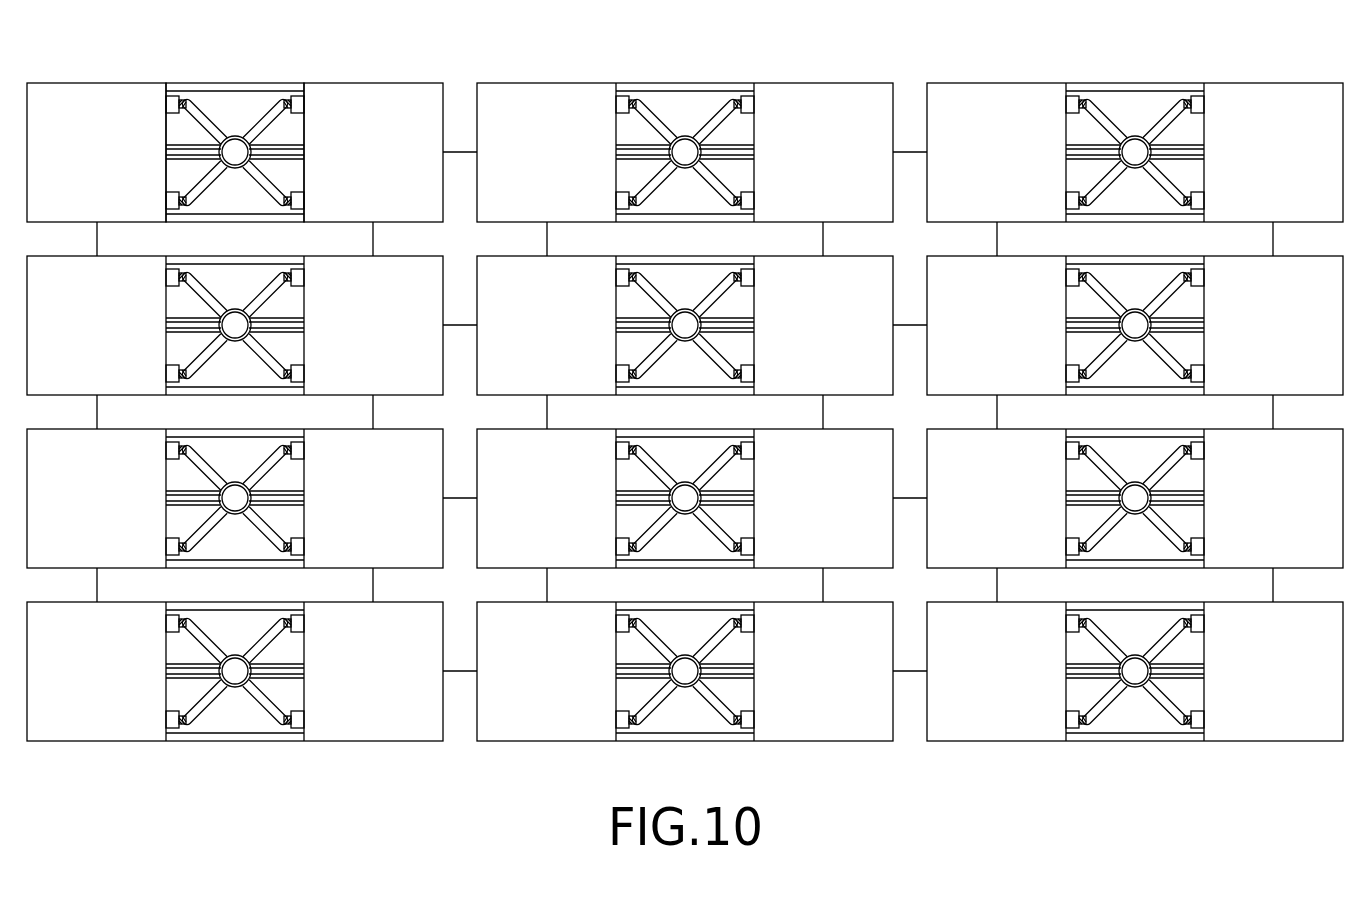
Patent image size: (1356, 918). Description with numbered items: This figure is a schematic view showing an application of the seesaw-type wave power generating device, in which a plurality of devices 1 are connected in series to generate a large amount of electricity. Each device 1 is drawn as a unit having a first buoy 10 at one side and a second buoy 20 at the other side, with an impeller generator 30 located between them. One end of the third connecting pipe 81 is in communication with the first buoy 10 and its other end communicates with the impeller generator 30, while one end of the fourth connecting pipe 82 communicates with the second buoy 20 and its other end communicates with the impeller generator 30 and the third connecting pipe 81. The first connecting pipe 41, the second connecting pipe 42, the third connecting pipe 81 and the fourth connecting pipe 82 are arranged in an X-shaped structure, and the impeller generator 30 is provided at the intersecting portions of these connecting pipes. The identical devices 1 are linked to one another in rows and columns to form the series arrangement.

The seesaw-type wave power generating device 1 is at (223, 55).
The first buoy 10 is at (94, 92).
The second buoy 20 is at (373, 90).
The impeller generator 30 is at (233, 134).
The first connecting pipe 41 is at (209, 185).
The second connecting pipe 42 is at (263, 120).
The third connecting pipe 81 is at (207, 120).
The fourth connecting pipe 82 is at (260, 185).